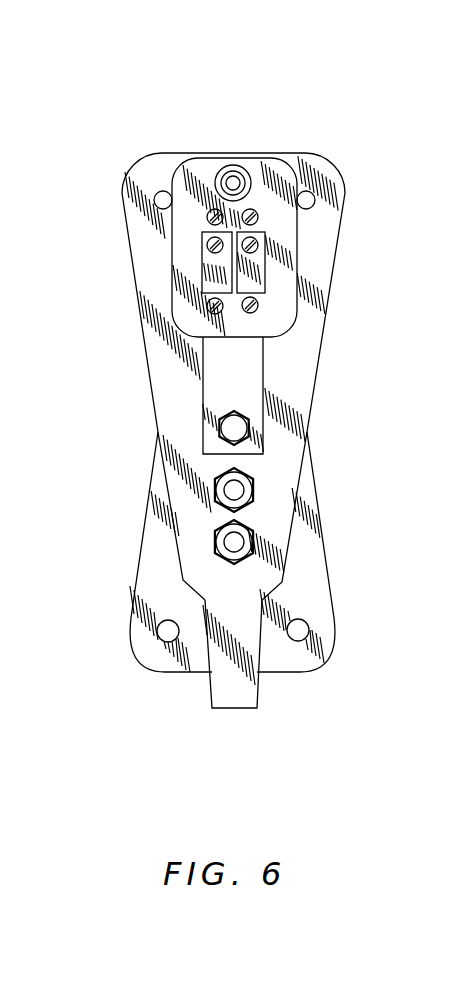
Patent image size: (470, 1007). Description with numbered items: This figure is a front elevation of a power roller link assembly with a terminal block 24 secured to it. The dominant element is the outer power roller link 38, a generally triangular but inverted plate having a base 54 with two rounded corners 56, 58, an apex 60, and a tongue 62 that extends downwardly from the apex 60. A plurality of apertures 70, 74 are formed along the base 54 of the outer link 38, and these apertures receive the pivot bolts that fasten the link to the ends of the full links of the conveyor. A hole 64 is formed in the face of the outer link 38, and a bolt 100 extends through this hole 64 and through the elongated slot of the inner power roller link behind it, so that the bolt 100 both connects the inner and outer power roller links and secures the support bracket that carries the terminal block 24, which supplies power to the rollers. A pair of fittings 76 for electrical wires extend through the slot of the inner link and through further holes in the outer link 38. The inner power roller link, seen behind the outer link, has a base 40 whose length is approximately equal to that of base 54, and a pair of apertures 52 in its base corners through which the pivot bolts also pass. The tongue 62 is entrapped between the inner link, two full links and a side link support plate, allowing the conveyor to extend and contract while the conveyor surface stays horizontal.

The terminal block 24 is at (287, 275).
The outer power roller link 38 is at (303, 369).
The base 40 is at (330, 675).
The apertures 52 is at (163, 633).
The base 54 is at (242, 152).
The rounded corner 56 is at (142, 160).
The rounded corner 58 is at (343, 178).
The apex 60 is at (248, 582).
The tongue 62 is at (238, 700).
The hole 64 is at (250, 427).
The apertures 70 is at (170, 185).
The apertures 74 is at (308, 190).
The fittings 76 is at (215, 499).
The bolt 100 is at (235, 418).